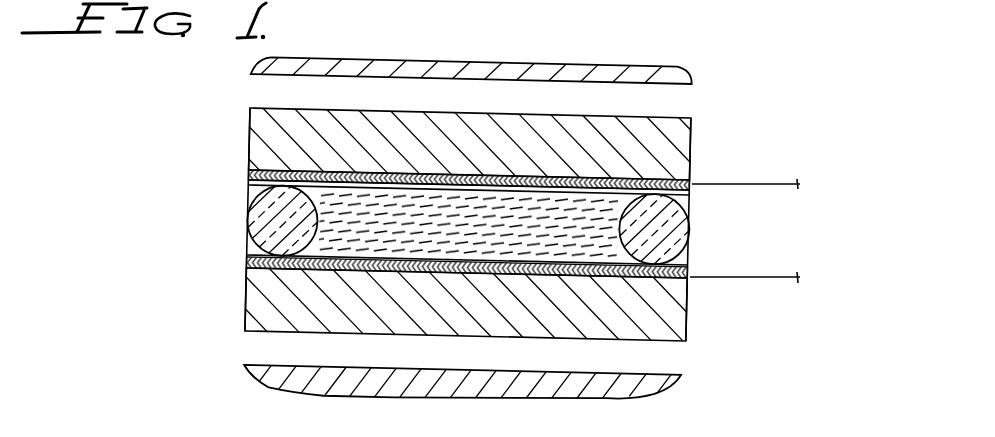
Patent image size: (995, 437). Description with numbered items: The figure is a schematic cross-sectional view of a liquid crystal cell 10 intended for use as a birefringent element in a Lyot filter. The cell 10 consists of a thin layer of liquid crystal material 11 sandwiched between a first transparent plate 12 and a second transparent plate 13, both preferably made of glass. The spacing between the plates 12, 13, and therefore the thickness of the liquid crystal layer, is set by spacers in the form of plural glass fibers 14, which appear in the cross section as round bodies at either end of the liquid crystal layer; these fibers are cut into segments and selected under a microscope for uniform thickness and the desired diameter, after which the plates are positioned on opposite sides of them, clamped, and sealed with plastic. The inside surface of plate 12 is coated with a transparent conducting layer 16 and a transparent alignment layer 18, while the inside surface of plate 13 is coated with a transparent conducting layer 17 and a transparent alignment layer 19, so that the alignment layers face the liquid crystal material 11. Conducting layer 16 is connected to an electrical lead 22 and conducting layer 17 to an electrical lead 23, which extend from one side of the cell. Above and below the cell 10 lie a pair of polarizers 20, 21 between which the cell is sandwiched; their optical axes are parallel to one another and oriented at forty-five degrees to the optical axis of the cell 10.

The liquid crystal cell 10 is at (706, 96).
The liquid crystal material 11 is at (415, 203).
The first transparent plate 12 is at (663, 153).
The second transparent plate 13 is at (682, 311).
The glass fibers 14 is at (265, 224).
The transparent conducting layer 16 is at (250, 172).
The transparent conducting layer 17 is at (255, 268).
The transparent alignment layer 18 is at (250, 182).
The transparent alignment layer 19 is at (250, 258).
The polarizer 20 is at (437, 78).
The polarizer 21 is at (397, 365).
The electrical lead 22 is at (778, 184).
The electrical lead 23 is at (783, 277).